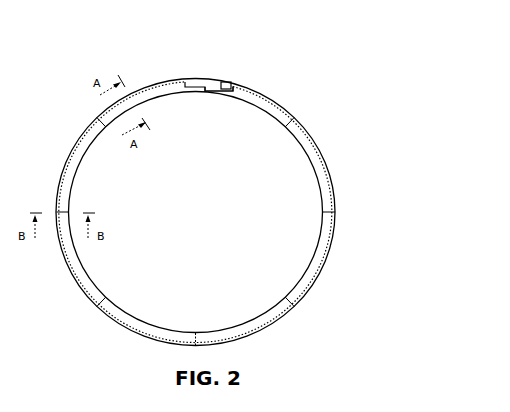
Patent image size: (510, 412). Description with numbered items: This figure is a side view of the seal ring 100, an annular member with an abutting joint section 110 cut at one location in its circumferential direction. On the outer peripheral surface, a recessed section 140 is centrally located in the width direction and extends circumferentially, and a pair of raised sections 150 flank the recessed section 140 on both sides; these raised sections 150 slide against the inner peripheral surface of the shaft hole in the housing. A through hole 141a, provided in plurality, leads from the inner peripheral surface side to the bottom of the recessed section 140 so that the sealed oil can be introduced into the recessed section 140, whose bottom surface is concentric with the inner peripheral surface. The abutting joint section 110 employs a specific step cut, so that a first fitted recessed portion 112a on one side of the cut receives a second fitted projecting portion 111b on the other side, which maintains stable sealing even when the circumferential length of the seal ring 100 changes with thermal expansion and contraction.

The seal ring 100 is at (225, 184).
The abutting joint section 110 is at (197, 62).
The second fitted projecting portion 111b is at (213, 80).
The first fitted recessed portion 112a is at (228, 86).
The recessed section 140 is at (328, 167).
The through hole 141a is at (327, 212).
The raised section 150 is at (317, 142).